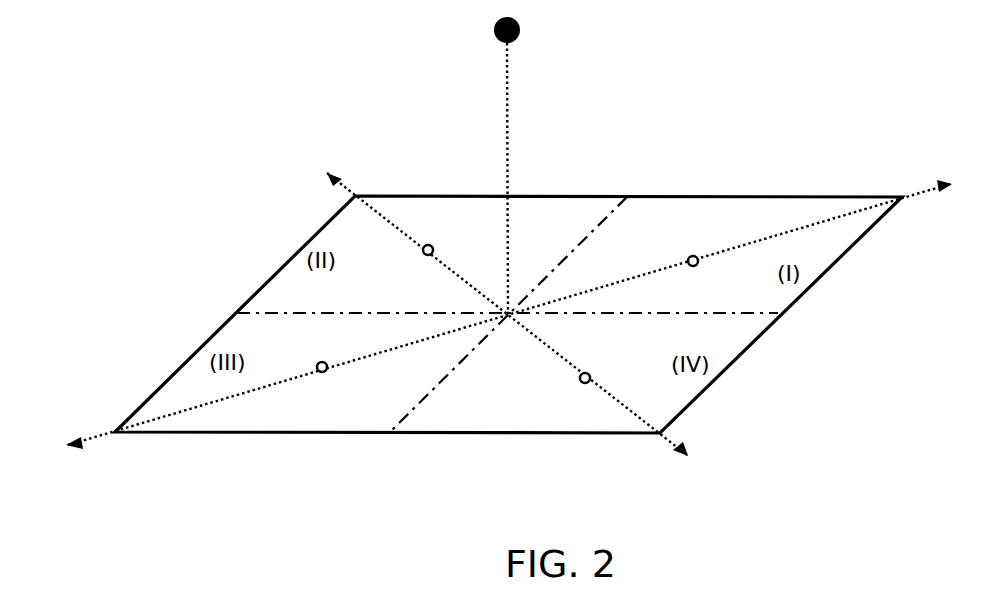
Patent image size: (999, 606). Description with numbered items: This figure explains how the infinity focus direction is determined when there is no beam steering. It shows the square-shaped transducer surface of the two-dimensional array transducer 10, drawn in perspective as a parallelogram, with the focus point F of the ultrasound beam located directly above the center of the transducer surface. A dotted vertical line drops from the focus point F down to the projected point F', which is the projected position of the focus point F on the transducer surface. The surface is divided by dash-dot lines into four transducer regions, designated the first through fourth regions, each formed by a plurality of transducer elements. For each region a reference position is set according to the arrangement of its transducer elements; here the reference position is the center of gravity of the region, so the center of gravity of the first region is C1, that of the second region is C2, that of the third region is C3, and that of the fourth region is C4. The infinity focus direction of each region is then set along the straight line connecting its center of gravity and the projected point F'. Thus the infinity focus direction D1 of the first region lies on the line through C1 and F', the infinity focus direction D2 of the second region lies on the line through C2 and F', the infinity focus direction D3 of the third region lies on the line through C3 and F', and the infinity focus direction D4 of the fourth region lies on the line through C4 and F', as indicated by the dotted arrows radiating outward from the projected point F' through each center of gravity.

The 2D array transducer 10 is at (677, 181).
The focus point F is at (520, 165).
The projected point F' is at (500, 334).
The position of center of gravity of transducer region (I) C1 is at (705, 279).
The position of center of gravity of transducer region (II) C2 is at (420, 266).
The position of center of gravity of transducer region (III) C3 is at (333, 384).
The position of center of gravity of transducer region (IV) C4 is at (603, 370).
The infinity focus direction of transducer region (I) D1 is at (963, 187).
The infinity focus direction of transducer region (II) D2 is at (322, 163).
The infinity focus direction of transducer region (III) D3 is at (61, 453).
The infinity focus direction of transducer region (IV) D4 is at (699, 466).